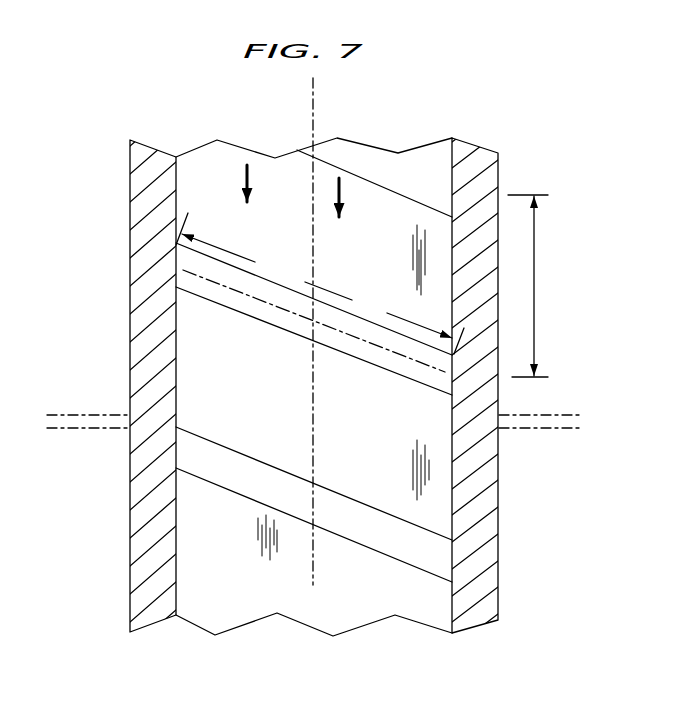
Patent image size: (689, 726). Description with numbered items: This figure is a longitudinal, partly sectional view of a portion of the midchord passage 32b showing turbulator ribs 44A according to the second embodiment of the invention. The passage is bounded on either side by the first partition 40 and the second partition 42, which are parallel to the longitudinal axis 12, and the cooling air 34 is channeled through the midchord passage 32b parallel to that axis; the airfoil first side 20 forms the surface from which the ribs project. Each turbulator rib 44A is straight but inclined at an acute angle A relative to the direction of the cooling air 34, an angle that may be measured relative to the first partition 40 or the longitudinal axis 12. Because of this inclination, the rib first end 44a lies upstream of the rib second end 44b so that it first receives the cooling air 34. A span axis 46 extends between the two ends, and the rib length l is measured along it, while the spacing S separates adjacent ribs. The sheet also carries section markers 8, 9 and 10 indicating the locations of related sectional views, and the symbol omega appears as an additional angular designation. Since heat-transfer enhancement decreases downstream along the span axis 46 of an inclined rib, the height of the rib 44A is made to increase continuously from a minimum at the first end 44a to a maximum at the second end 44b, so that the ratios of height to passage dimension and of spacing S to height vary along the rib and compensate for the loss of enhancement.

The section line 8- 8 is at (47, 415).
The section line 9- 9 is at (313, 78).
The section line 10- 10 is at (47, 428).
The longitudinal axis 12 is at (313, 390).
The airfoil first side 20 is at (365, 613).
The midchord passage 32b is at (239, 548).
The cooling air 34 is at (245, 172).
The first partition 40 is at (130, 545).
The second partition 42 is at (498, 530).
The rib first end 44a is at (182, 252).
The rib second end 44b is at (458, 362).
The turbulator rib 44A is at (406, 381).
The span axis 46 is at (258, 298).
The rib spacing S is at (534, 266).
The rib length l is at (240, 254).
The angle omega is at (363, 318).
The acute angle A is at (183, 345).